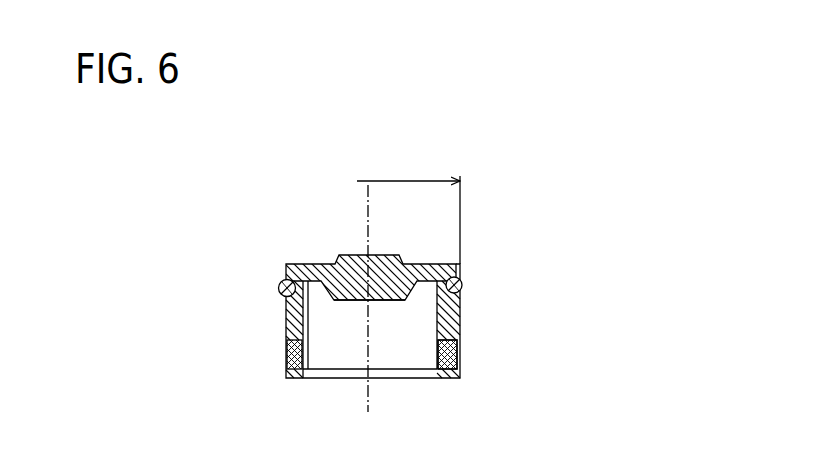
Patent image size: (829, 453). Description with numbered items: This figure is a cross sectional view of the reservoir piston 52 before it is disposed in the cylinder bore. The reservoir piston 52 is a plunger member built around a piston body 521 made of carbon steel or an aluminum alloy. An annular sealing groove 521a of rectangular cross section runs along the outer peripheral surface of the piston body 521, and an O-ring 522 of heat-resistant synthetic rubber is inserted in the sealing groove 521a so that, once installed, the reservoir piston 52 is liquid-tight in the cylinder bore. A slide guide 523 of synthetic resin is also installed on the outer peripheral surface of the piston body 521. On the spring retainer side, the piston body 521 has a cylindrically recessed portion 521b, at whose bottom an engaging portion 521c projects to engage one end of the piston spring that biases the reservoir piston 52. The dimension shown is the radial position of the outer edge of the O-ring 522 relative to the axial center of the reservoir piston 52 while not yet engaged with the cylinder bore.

The reservoir piston 52 is at (250, 184).
The piston body 521 is at (295, 265).
The O-ring 522 is at (280, 288).
The slide guide 523 is at (286, 352).
The sealing groove 521a is at (463, 289).
The recessed portion 521b is at (437, 341).
The engaging portion 521c is at (338, 303).